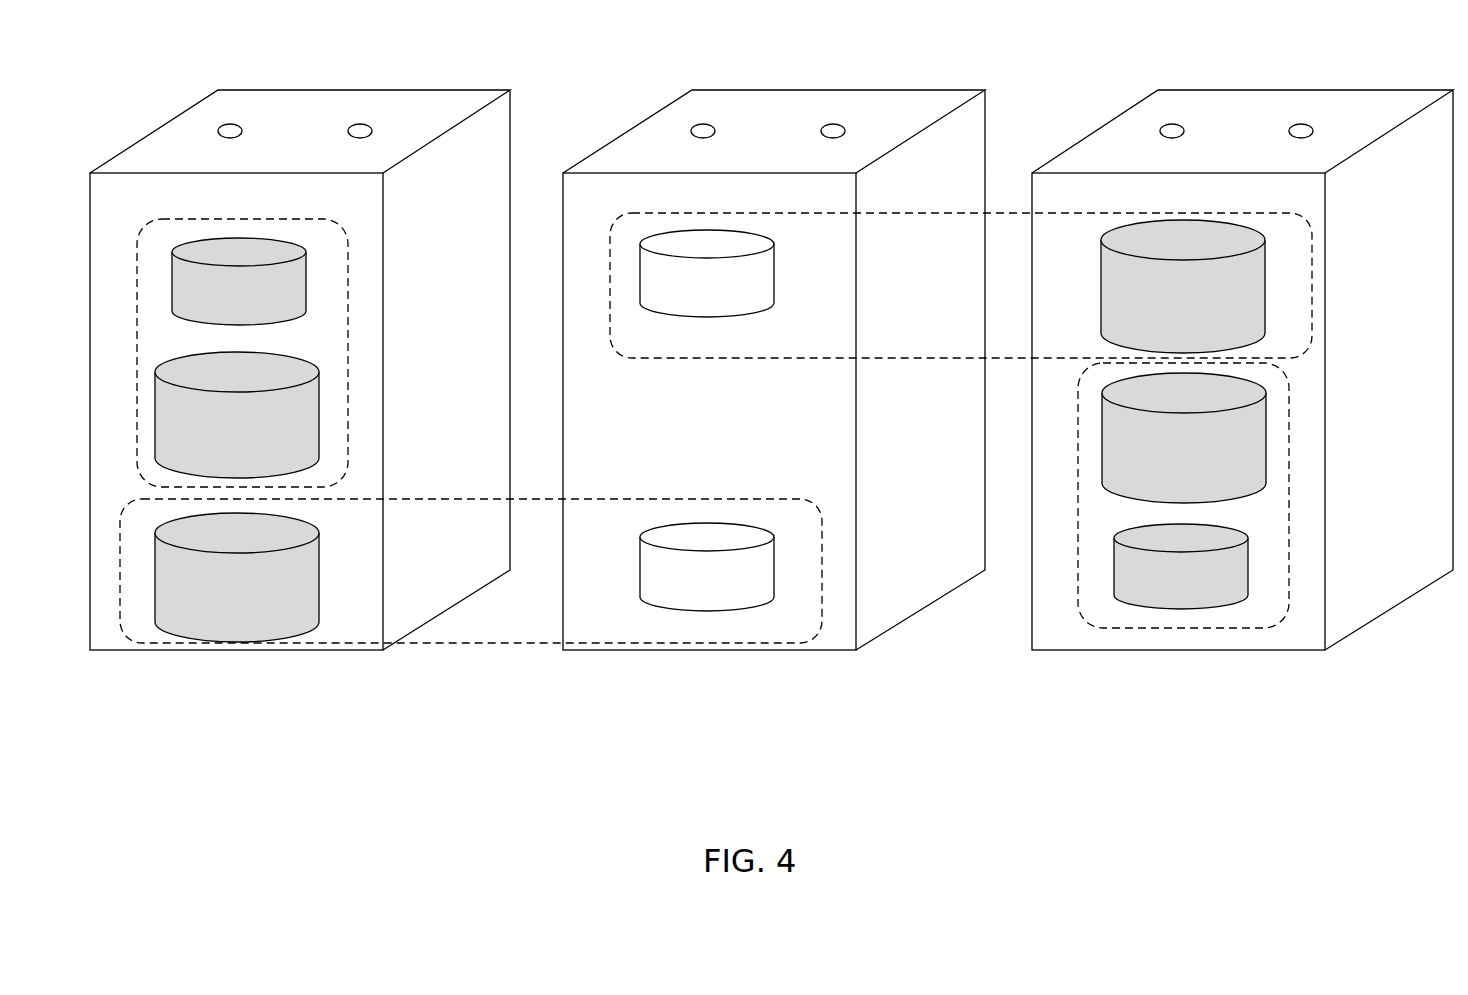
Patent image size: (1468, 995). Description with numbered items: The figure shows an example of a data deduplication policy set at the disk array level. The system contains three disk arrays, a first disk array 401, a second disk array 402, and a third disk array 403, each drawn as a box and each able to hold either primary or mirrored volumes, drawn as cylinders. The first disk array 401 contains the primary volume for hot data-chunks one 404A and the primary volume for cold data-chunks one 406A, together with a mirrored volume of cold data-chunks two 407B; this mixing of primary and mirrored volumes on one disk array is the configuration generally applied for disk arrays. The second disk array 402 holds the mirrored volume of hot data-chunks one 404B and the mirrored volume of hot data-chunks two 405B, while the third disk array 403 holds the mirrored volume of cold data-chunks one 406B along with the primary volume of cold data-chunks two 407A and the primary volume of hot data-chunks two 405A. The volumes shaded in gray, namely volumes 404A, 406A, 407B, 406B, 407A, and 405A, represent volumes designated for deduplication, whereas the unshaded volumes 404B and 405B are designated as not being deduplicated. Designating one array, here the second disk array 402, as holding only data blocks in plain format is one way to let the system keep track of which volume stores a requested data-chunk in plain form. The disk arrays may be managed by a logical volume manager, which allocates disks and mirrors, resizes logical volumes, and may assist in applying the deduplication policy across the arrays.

The Disk Array 1 401 is at (313, 88).
The Disk Array 2 402 is at (817, 87).
The Disk Array 3 403 is at (1278, 88).
The primary volume for hot data-chunks 1 404A is at (309, 281).
The mirrored volume of hot data-chunks 1 404B is at (775, 292).
The primary volume for hot data-chunks 2 405A is at (1253, 570).
The mirrored volume of hot data-chunks 2 405B is at (780, 560).
The primary volume for cold data-chunks 1 406A is at (320, 418).
The mirrored volume of cold data-chunks 1 406B is at (1275, 279).
The primary volume for cold data-chunks 2 407A is at (1260, 438).
The mirrored volume of cold data-chunks 2 407B is at (320, 580).